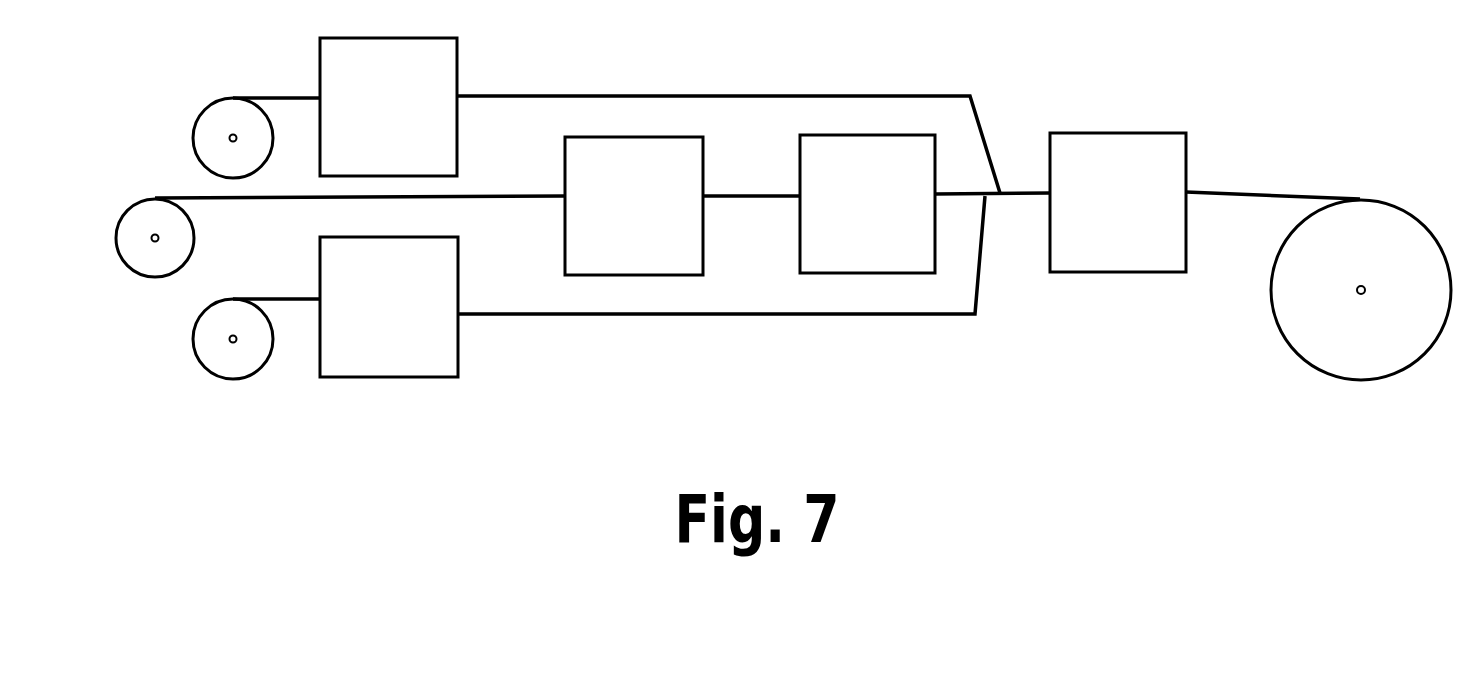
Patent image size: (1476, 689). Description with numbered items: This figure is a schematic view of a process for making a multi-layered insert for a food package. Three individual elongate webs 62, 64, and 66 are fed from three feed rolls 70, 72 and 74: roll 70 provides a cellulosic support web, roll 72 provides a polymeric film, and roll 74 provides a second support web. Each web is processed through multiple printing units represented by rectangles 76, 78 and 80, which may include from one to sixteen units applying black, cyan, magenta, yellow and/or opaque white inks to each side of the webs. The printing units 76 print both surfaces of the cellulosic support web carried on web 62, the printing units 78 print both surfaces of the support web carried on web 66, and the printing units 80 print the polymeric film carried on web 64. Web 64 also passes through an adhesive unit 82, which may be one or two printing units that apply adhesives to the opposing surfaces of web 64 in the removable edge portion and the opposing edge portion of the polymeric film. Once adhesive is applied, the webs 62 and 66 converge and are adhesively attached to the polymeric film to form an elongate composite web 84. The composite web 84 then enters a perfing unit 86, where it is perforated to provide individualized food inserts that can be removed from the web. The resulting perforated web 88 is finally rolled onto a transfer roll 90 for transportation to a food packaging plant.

The elongate web 62 is at (280, 97).
The elongate web 64 is at (518, 193).
The elongate web 66 is at (302, 293).
The feed roll 70 is at (215, 120).
The feed roll 72 is at (158, 220).
The feed roll 74 is at (227, 317).
The printing units 76 is at (413, 86).
The printing units 78 is at (413, 283).
The printing units 80 is at (655, 188).
The adhesive unit 82 is at (882, 193).
The composite web 84 is at (1028, 192).
The perfing unit 86 is at (1137, 183).
The perforated web 88 is at (1262, 190).
The transfer roll 90 is at (1384, 257).